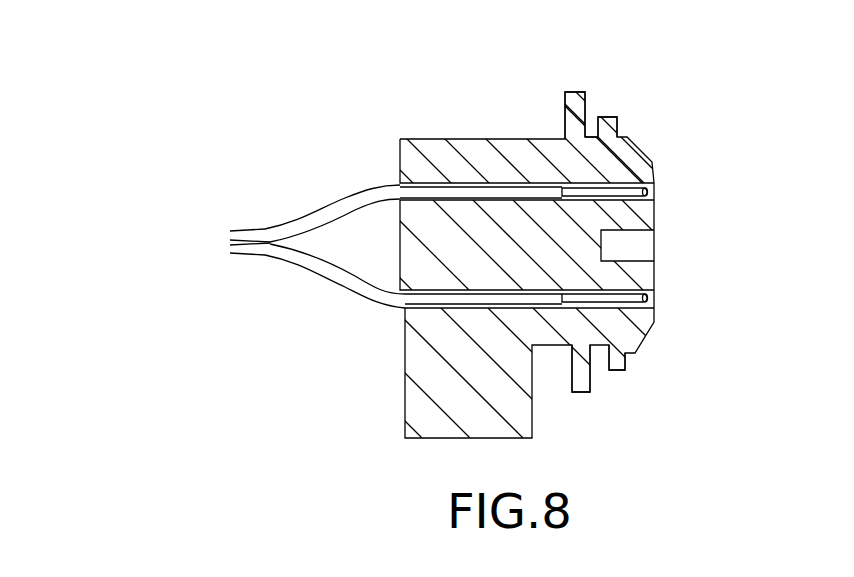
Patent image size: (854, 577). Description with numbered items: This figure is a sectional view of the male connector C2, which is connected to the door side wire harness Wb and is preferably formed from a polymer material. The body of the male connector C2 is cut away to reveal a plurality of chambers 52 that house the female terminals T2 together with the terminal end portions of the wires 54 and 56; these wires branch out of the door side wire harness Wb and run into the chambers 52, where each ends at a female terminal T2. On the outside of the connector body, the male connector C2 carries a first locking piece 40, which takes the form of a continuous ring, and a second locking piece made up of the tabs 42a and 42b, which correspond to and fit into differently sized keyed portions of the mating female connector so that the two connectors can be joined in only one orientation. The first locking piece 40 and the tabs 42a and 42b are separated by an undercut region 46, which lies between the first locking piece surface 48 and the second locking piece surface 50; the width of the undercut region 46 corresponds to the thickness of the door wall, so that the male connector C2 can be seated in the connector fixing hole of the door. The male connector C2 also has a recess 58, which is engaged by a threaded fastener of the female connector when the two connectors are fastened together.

The male connector C2 is at (489, 56).
The first locking piece 40 is at (565, 92).
The first locking piece surface 48 is at (585, 92).
The second locking piece surface 50 is at (598, 136).
The tab 42a is at (617, 120).
The tab 42b is at (626, 371).
The undercut region 46 is at (600, 357).
The recess 58 is at (655, 247).
The female terminal T2 is at (650, 190).
The door side wire harness Wb is at (262, 254).
The chamber 52 is at (401, 309).
The wire 54 is at (336, 274).
The wire 56 is at (320, 214).